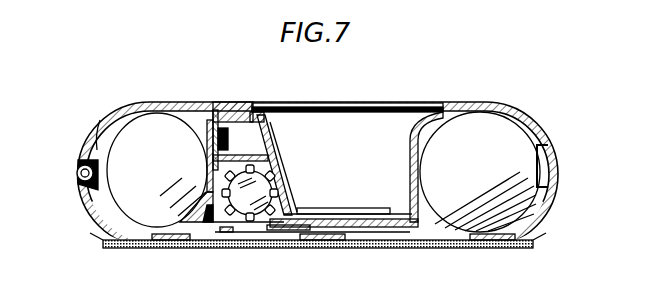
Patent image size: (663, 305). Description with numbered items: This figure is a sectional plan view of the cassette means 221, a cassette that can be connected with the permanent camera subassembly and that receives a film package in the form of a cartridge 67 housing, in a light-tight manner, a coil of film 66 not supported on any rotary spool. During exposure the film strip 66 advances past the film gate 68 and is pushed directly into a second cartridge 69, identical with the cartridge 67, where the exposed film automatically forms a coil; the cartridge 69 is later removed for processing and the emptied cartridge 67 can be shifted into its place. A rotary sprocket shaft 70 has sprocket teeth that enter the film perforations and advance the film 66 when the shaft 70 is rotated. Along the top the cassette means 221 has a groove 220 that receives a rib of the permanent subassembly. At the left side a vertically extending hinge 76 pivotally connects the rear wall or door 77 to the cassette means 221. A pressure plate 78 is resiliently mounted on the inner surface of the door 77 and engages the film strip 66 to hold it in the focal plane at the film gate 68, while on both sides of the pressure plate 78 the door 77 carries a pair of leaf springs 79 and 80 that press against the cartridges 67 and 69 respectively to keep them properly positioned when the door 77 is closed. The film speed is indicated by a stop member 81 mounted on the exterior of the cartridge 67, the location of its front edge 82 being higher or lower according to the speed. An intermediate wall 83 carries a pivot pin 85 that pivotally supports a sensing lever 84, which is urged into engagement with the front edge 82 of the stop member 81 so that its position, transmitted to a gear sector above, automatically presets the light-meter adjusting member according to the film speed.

The film strip 66 is at (320, 217).
The cartridge 67 is at (118, 195).
The film gate 68 is at (360, 214).
The cartridge 69 is at (483, 127).
The rotary sprocket shaft 70 is at (257, 217).
The hinge 76 is at (77, 175).
The rear wall or door 77 is at (387, 247).
The pressure plate 78 is at (345, 234).
The leaf spring 79 is at (172, 240).
The leaf spring 80 is at (463, 240).
The stop member 81 is at (207, 183).
The front edge 82 is at (207, 172).
The intermediate wall 83 is at (278, 150).
The sensing lever 84 is at (207, 135).
The pivot pin 85 is at (225, 133).
The groove 220 is at (380, 112).
The cassette means 221 is at (548, 150).